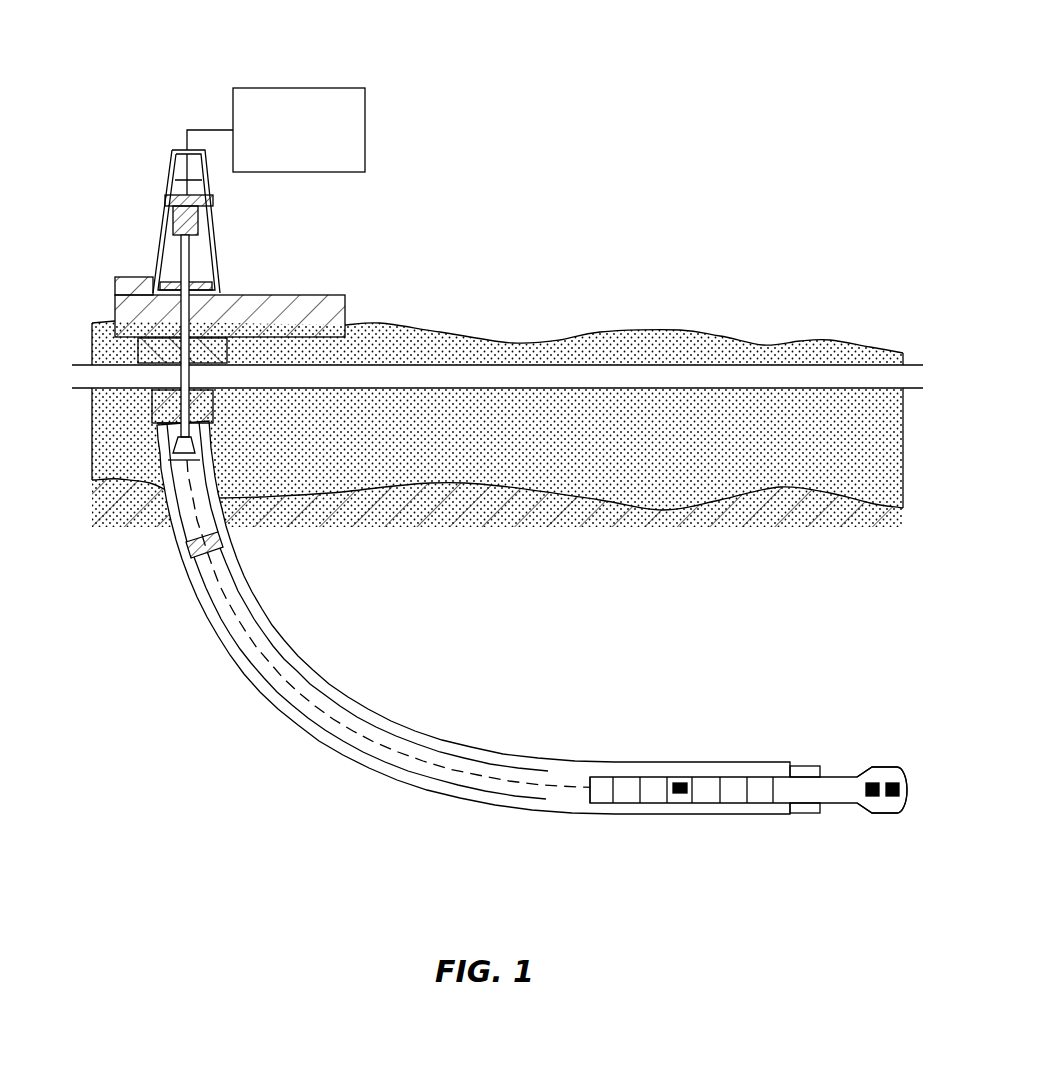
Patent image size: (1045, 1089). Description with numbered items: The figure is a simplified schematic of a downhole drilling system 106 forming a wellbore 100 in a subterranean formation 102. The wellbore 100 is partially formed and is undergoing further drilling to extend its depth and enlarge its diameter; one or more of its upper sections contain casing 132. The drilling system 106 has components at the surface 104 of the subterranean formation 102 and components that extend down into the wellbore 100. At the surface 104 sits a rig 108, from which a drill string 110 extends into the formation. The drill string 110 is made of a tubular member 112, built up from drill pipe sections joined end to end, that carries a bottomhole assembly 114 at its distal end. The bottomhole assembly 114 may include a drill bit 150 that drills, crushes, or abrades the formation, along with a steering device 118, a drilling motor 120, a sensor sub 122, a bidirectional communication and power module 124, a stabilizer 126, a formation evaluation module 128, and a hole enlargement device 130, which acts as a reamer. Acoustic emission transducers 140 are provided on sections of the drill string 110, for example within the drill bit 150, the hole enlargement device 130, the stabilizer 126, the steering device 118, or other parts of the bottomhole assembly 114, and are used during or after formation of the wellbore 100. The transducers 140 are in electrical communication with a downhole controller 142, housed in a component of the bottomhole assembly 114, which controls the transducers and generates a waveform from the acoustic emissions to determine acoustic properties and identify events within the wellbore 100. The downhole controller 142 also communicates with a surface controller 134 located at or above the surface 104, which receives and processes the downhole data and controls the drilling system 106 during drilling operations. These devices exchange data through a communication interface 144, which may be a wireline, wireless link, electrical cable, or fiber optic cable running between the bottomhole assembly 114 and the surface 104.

The wellbore 100 is at (195, 622).
The subterranean formation 102 is at (596, 592).
The surface 104 is at (82, 364).
The drilling system 106 is at (122, 178).
The rig 108 is at (200, 278).
The drill string 110 is at (240, 616).
The tubular member 112 is at (223, 578).
The bottomhole assembly 114 is at (729, 821).
The steering device 118 is at (705, 780).
The drilling motor 120 is at (735, 780).
The sensor sub 122 is at (680, 797).
The bidirectional communication and power module 124 is at (655, 792).
The stabilizer 126 is at (627, 792).
The formation evaluation module 128 is at (600, 792).
The hole enlargement device 130 is at (803, 770).
The casing 132 is at (152, 458).
The surface controller 134 is at (266, 88).
The acoustic emission transducers 140 is at (678, 782).
The downhole controller 142 is at (763, 780).
The communication interface 144 is at (205, 127).
The drill bit 150 is at (887, 777).